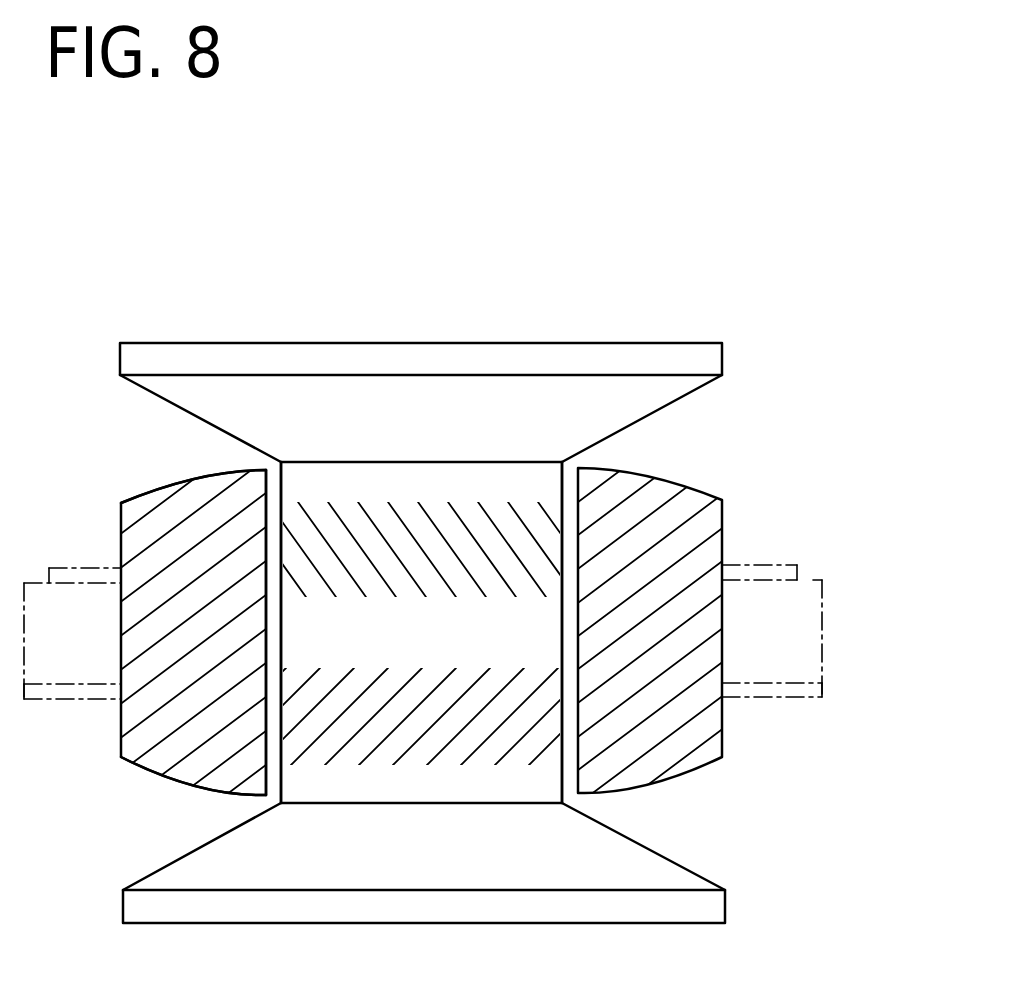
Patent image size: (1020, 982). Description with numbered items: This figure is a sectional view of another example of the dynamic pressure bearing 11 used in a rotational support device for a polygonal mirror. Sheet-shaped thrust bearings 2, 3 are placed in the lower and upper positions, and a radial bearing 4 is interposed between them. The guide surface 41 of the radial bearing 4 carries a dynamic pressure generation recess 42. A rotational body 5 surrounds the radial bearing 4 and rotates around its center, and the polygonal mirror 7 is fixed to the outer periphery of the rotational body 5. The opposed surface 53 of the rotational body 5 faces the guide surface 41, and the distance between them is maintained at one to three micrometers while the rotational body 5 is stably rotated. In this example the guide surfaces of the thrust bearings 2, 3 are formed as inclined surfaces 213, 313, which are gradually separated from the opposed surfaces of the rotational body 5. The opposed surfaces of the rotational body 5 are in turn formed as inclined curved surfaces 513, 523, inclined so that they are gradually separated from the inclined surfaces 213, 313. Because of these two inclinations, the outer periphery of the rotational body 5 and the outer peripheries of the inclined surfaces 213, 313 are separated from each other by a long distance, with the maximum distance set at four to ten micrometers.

The dynamic pressure bearing 11 is at (146, 314).
The thrust bearing 2 is at (715, 905).
The inclined surface 213 is at (672, 857).
The thrust bearing 3 is at (573, 357).
The inclined surface 313 is at (647, 417).
The radial bearing 4 is at (393, 612).
The guide surface 41 is at (563, 633).
The dynamic pressure generation recess 42 is at (430, 688).
The rotational body 5 is at (722, 752).
The inclined curved surface 513 is at (182, 787).
The inclined curved surface 523 is at (215, 470).
The opposed surface 53 is at (267, 628).
The polygonal mirror 7 is at (39, 595).